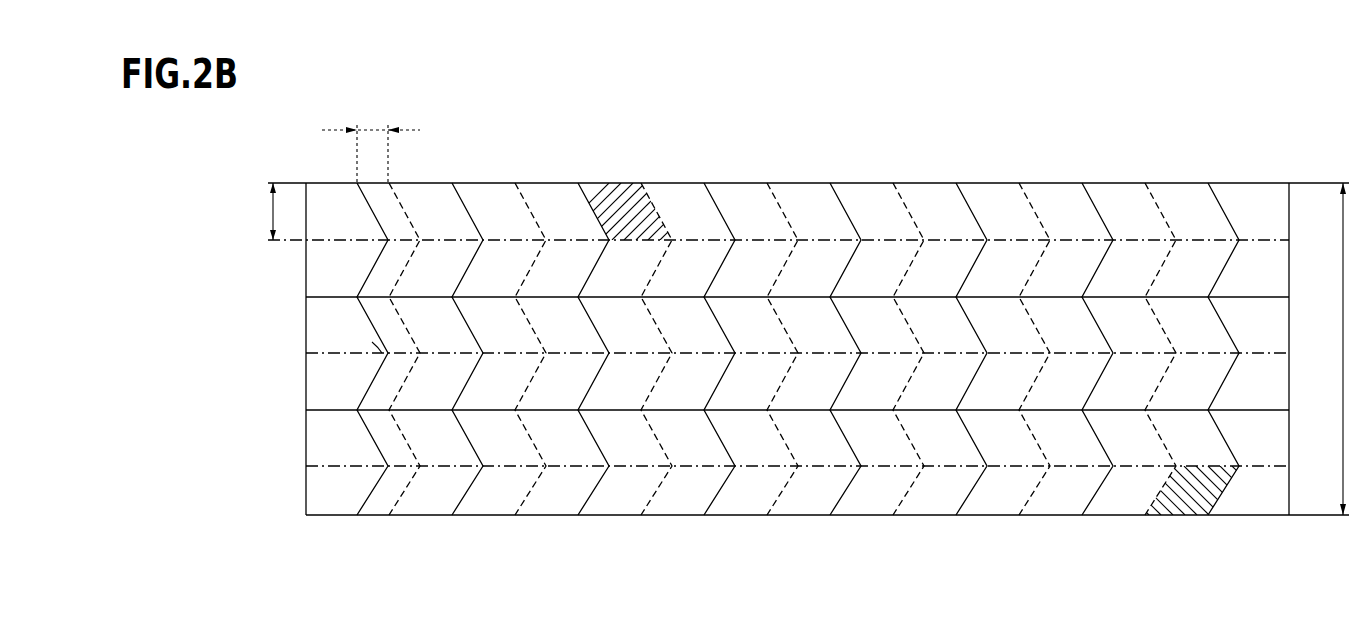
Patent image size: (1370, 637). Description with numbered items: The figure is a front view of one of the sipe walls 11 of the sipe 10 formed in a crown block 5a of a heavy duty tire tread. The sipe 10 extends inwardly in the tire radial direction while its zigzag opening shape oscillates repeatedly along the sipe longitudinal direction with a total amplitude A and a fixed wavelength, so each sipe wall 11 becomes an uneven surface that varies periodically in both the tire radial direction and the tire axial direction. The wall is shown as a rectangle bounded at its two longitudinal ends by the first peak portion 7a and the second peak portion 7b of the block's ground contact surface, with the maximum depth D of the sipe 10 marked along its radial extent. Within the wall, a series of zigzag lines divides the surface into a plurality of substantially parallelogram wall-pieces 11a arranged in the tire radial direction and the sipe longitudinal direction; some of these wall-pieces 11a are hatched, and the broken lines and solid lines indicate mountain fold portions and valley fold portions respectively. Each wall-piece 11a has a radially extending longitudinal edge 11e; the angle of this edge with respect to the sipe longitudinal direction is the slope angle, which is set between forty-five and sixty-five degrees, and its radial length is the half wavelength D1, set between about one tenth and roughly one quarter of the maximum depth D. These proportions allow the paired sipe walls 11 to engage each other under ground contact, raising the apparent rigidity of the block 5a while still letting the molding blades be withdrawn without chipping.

The sipe 10 is at (733, 183).
The crown block 5a is at (1050, 183).
The first peak portion 7a is at (1289, 183).
The second peak portion 7b is at (306, 183).
The sipe wall 11 is at (1182, 505).
The wall-piece 11a is at (605, 183).
The longitudinal edge 11e is at (365, 318).
The half wavelength D1 is at (254, 211).
The maximum depth D is at (1355, 349).
The total amplitude A is at (371, 140).